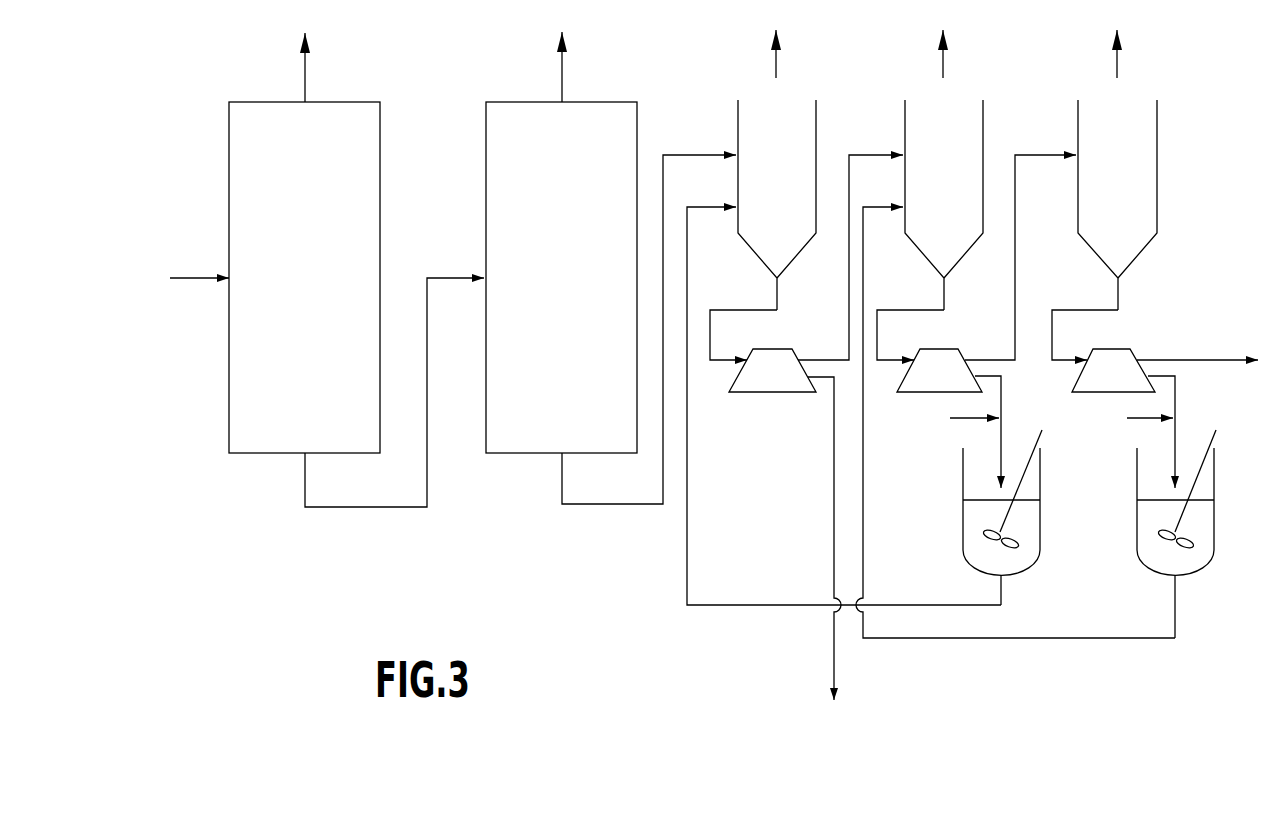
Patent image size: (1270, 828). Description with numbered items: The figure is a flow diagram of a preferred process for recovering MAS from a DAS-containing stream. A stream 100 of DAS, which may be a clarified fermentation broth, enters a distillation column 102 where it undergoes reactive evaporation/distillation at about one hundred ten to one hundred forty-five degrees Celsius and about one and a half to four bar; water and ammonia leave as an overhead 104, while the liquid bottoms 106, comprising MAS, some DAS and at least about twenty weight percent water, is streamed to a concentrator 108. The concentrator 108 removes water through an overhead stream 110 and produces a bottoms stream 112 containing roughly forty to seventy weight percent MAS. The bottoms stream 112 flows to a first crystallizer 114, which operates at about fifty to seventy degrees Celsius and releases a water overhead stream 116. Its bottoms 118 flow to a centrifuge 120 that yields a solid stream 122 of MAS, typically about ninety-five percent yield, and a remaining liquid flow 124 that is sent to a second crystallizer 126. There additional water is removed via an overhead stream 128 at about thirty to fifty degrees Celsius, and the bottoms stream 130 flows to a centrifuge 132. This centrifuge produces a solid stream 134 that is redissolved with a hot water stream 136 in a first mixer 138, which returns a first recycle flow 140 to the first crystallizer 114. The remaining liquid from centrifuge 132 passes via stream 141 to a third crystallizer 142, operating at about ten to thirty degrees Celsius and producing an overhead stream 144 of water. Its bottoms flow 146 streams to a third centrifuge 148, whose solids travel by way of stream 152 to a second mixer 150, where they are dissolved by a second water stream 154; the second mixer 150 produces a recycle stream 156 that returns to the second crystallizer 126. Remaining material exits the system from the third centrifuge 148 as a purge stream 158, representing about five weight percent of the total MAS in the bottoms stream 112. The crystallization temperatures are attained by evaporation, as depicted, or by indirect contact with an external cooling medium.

The stream of DAS 100 is at (190, 283).
The distillation column 102 is at (265, 455).
The overhead 104 is at (305, 70).
The liquid bottoms 106 is at (357, 508).
The concentrator 108 is at (520, 455).
The overhead stream 110 is at (562, 70).
The bottoms stream 112 is at (612, 506).
The first crystallizer 114 is at (738, 125).
The water overhead stream 116 is at (776, 66).
The bottoms 118 is at (752, 308).
The centrifuge 120 is at (748, 393).
The solid stream 122 is at (832, 497).
The remaining liquid flow 124 is at (838, 358).
The second crystallizer 126 is at (905, 125).
The overhead stream 128 is at (943, 66).
The bottoms stream 130 is at (920, 308).
The centrifuge 132 is at (910, 393).
The solid stream 134 is at (1002, 398).
The water stream 136 is at (965, 422).
The first mixer 138 is at (1022, 577).
The first recycle flow 140 is at (765, 607).
The stream 141 is at (1003, 358).
The third crystallizer 142 is at (1078, 125).
The overhead stream 144 is at (1117, 66).
The bottoms flow 146 is at (1093, 308).
The third centrifuge 148 is at (1112, 394).
The second mixer 150 is at (1197, 577).
The stream 152 is at (1178, 395).
The second water stream 154 is at (1140, 422).
The recycle stream 156 is at (1000, 640).
The purge stream 158 is at (1178, 358).